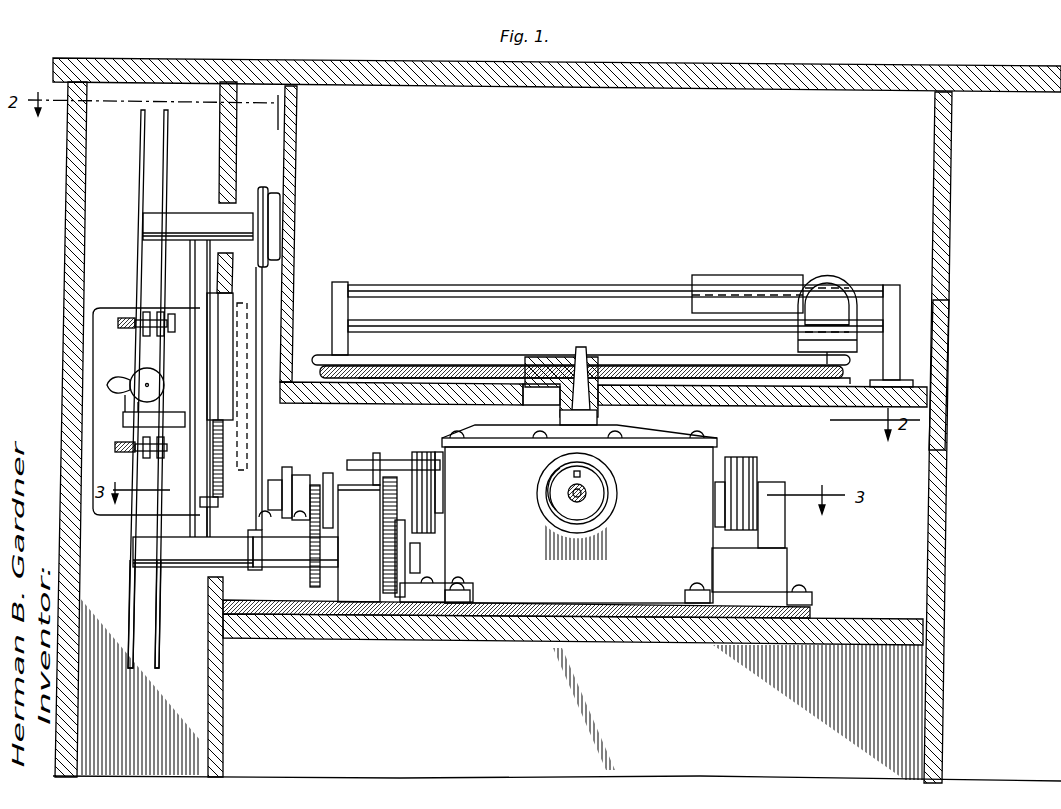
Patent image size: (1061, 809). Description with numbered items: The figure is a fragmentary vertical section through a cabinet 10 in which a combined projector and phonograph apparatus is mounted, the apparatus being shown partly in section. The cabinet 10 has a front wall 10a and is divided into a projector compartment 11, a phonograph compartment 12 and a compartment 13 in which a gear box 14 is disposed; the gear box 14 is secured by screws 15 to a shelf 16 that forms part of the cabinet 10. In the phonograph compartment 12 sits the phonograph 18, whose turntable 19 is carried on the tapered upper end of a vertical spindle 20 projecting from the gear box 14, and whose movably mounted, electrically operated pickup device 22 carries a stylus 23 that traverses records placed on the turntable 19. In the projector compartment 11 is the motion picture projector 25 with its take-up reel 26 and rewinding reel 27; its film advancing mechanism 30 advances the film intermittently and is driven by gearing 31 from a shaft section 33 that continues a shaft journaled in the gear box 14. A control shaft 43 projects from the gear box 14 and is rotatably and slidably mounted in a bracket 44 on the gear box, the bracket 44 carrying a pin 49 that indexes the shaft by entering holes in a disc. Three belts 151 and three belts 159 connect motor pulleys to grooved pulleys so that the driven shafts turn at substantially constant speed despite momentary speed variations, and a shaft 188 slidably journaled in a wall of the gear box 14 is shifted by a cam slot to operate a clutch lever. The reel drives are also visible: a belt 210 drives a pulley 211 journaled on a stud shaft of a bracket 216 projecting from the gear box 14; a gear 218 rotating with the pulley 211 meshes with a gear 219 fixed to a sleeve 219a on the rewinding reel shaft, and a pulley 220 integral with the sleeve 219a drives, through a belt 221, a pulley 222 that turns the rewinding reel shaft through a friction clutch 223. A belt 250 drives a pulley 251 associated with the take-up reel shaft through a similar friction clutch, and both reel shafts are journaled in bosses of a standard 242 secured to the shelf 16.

The cabinet 10 is at (137, 56).
The front wall 10a is at (220, 176).
The projector compartment 11 is at (98, 193).
The phonograph compartment 12 is at (858, 138).
The compartment 13 is at (895, 545).
The gear box 14 is at (650, 606).
The screws 15 is at (465, 590).
The shelf 16 is at (853, 645).
The phonograph 18 is at (597, 286).
The turntable 19 is at (836, 375).
The spindle 20 is at (590, 357).
The pickup device 22 is at (828, 272).
The stylus 23 is at (822, 357).
The motion picture projector 25 is at (132, 266).
The take-up reel 26 is at (158, 646).
The rewinding reel 27 is at (170, 121).
The film advancing mechanism 30 is at (130, 394).
The gearing 31 is at (225, 445).
The shaft section 33 is at (262, 483).
The shaft 43 is at (570, 494).
The bracket 44 is at (590, 502).
The pin 49 is at (583, 474).
The belts 151 is at (452, 432).
The belts 159 is at (748, 472).
The shaft 188 is at (389, 462).
The belt 210 is at (333, 522).
The pulley 211 is at (340, 483).
The bracket 216 is at (362, 540).
The gear 218 is at (317, 484).
The gear 219 is at (316, 590).
The sleeve 219a is at (292, 553).
The pulley 220 is at (247, 577).
The belt 221 is at (262, 295).
The pulley 222 is at (268, 190).
The friction clutch 223 is at (281, 198).
The standard 242 is at (242, 358).
The belt 250 is at (388, 598).
The pulley 251 is at (413, 577).